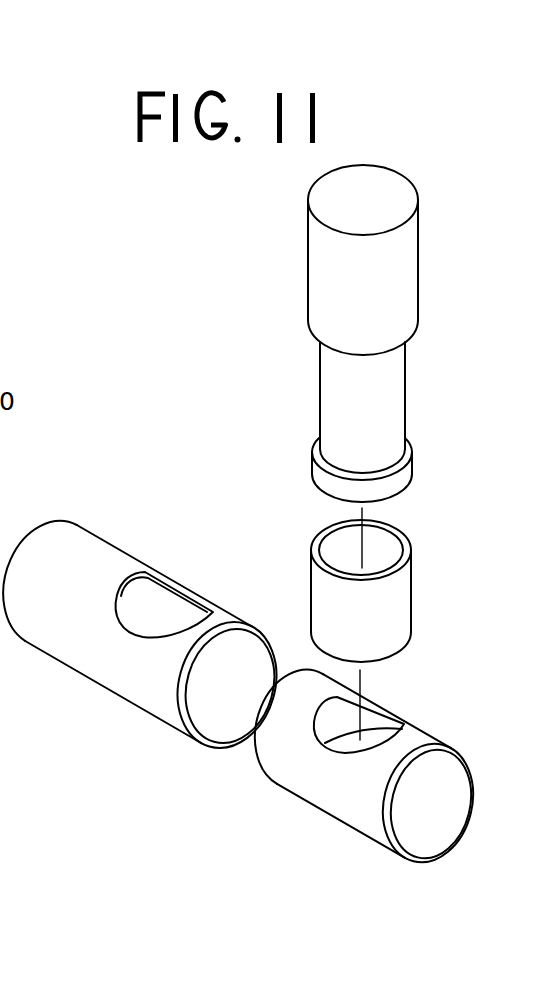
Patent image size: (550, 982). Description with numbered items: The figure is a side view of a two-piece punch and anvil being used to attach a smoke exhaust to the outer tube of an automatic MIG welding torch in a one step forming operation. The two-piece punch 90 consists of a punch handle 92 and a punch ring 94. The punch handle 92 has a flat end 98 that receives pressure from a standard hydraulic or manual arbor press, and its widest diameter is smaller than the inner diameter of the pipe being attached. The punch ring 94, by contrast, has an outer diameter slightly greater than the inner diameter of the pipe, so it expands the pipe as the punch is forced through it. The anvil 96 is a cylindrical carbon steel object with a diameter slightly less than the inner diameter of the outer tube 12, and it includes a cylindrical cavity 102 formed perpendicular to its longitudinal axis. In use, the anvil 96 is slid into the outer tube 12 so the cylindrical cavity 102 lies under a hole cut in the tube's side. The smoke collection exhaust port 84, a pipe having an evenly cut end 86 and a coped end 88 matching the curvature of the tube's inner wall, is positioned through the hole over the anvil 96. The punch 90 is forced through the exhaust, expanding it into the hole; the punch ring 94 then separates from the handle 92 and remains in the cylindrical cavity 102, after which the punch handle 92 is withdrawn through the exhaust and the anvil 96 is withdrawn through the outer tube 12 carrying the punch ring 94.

The outer tube 12 is at (90, 523).
The smoke collection exhaust port 84 is at (407, 527).
The evenly cut end 86 is at (407, 551).
The coped end 88 is at (400, 653).
The two-piece punch 90 is at (270, 180).
The punch handle 92 is at (350, 163).
The punch ring 94 is at (410, 442).
The anvil 96 is at (437, 737).
The flat end 98 is at (390, 187).
The cylindrical cavity 102 is at (373, 720).